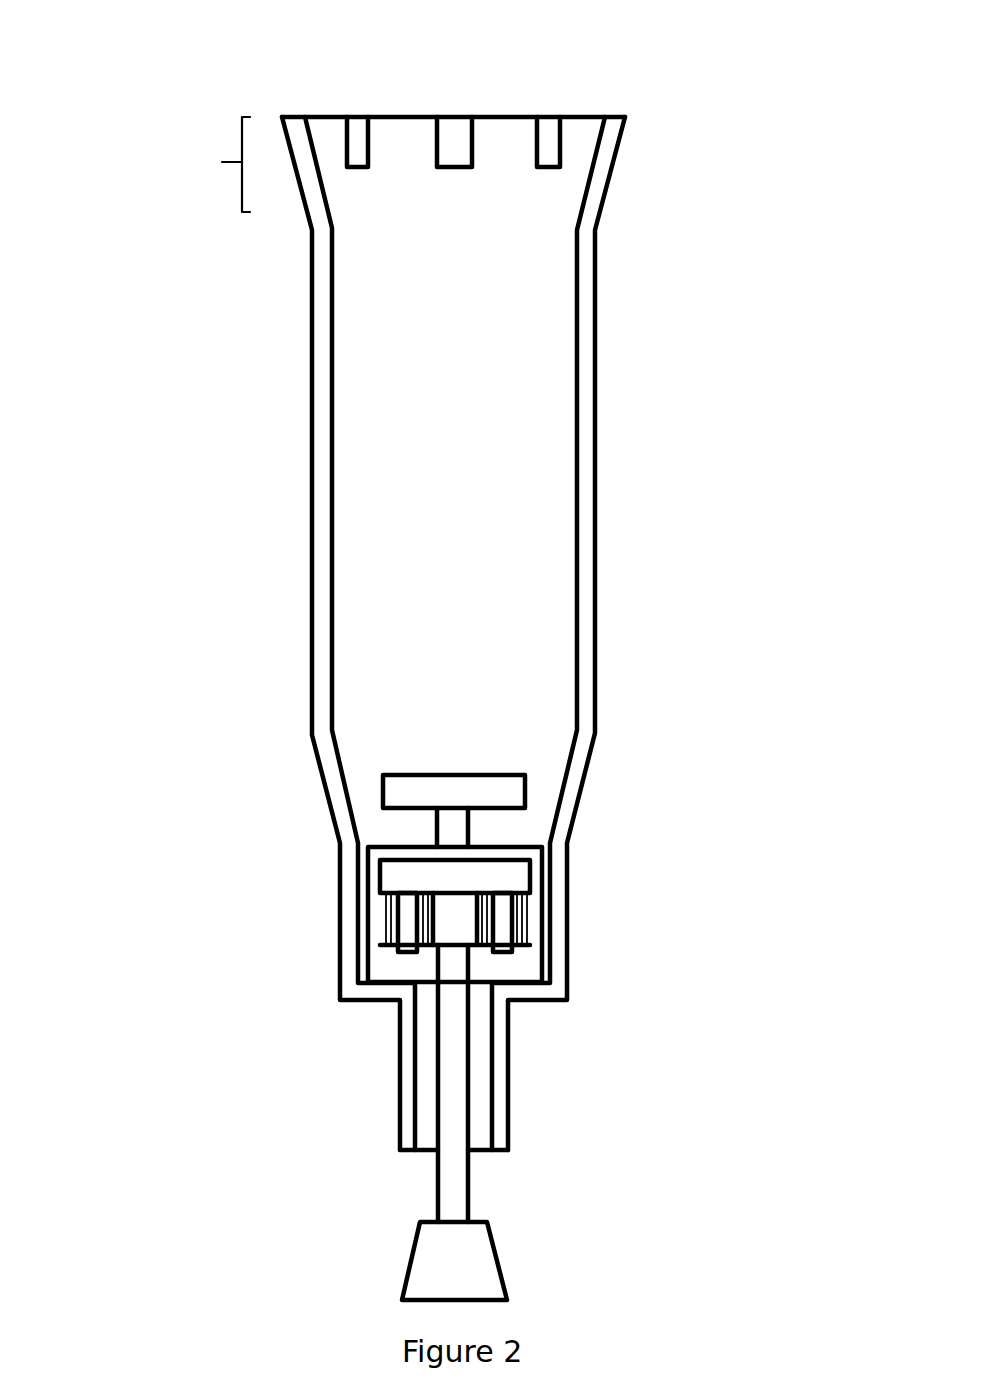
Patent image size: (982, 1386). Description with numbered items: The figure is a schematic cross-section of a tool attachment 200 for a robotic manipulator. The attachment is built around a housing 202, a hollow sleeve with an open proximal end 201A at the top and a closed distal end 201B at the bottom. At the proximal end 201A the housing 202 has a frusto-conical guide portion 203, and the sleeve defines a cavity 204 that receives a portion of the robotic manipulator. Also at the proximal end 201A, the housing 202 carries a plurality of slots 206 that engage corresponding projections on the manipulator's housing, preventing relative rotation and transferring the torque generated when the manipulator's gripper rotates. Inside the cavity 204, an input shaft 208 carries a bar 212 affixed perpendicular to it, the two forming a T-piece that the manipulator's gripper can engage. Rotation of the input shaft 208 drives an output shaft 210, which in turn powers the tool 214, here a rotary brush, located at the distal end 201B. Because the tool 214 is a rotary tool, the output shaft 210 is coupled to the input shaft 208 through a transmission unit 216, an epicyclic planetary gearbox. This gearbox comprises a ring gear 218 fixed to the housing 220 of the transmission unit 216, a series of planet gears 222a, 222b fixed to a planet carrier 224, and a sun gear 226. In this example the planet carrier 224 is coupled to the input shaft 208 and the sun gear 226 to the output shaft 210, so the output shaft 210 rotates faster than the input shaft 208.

The tool attachment 200 is at (705, 207).
The proximal end 201A is at (437, 88).
The distal end 201B is at (503, 1168).
The housing 202 is at (330, 383).
The guide portion 203 is at (200, 164).
The cavity 204 is at (443, 410).
The slots 206 is at (370, 143).
The input shaft 208 is at (457, 827).
The output shaft 210 is at (455, 1143).
The bar 212 is at (422, 792).
The tool 214 is at (450, 1262).
The transmission unit 216 is at (545, 895).
The ring gear 218 is at (377, 930).
The housing of the transmission unit 220 is at (370, 872).
The planet gear 222a is at (525, 936).
The planet gear 222b is at (380, 940).
The planet carrier 224 is at (520, 876).
The sun gear 226 is at (462, 932).